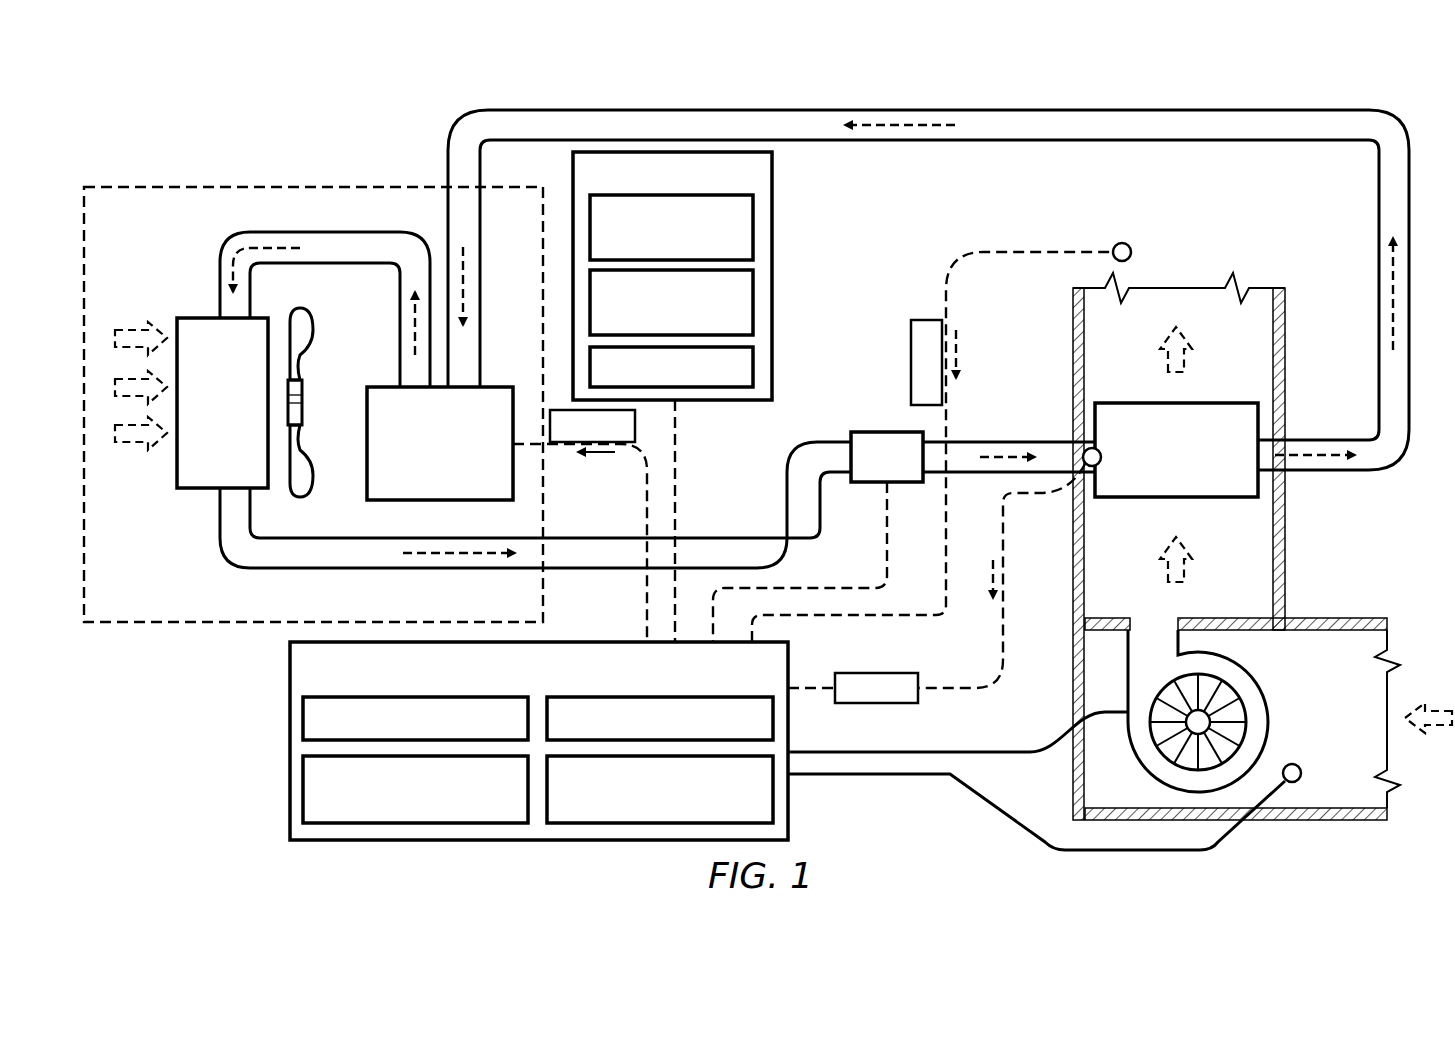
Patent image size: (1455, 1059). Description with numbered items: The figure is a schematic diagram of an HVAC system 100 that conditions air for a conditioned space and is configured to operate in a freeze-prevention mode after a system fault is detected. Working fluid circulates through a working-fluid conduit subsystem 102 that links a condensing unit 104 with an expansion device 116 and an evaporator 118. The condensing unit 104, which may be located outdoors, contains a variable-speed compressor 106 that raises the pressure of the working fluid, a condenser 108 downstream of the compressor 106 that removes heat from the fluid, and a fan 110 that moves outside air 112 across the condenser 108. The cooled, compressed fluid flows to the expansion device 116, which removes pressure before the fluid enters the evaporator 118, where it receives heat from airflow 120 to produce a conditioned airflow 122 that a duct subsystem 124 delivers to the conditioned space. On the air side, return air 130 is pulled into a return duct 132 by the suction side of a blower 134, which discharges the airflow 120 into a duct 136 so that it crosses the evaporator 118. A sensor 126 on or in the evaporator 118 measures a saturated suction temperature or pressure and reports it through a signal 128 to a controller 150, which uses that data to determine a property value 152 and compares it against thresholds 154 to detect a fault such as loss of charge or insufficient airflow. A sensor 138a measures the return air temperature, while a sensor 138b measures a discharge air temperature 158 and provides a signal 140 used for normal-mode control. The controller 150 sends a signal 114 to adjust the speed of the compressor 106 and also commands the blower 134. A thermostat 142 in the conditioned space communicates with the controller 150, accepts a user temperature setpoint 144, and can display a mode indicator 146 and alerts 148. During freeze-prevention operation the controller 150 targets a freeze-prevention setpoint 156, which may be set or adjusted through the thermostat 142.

The HVAC system 100 is at (1220, 60).
The working-fluid conduit subsystem 102 is at (632, 110).
The condensing unit 104 is at (312, 187).
The compressor 106 is at (440, 443).
The condenser 108 is at (177, 470).
The fan 110 is at (313, 333).
The air 112 is at (131, 328).
The signal 114 is at (635, 426).
The expansion device 116 is at (818, 537).
The evaporator 118 is at (1176, 450).
The airflow 120 is at (1185, 570).
The conditioned airflow 122 is at (1185, 360).
The duct subsystem 124 is at (1285, 338).
The sensor 126 is at (1086, 448).
The signal 128 is at (878, 703).
The return air 130 is at (1435, 735).
The return duct 132 is at (1313, 820).
The blower 134 is at (1255, 680).
The duct 136 is at (1285, 528).
The sensor 138a is at (1300, 765).
The sensor 138b is at (1132, 250).
The signal 140 is at (911, 365).
The thermostat 142 is at (772, 178).
The temperature setpoint 144 is at (753, 226).
The mode indicator 146 is at (753, 300).
The alerts 148 is at (753, 366).
The controller 150 is at (539, 741).
The property value 152 is at (415, 718).
The thresholds 154 is at (660, 718).
The freeze-operation setpoint value 156 is at (415, 789).
The discharge air temperature 158 is at (660, 789).